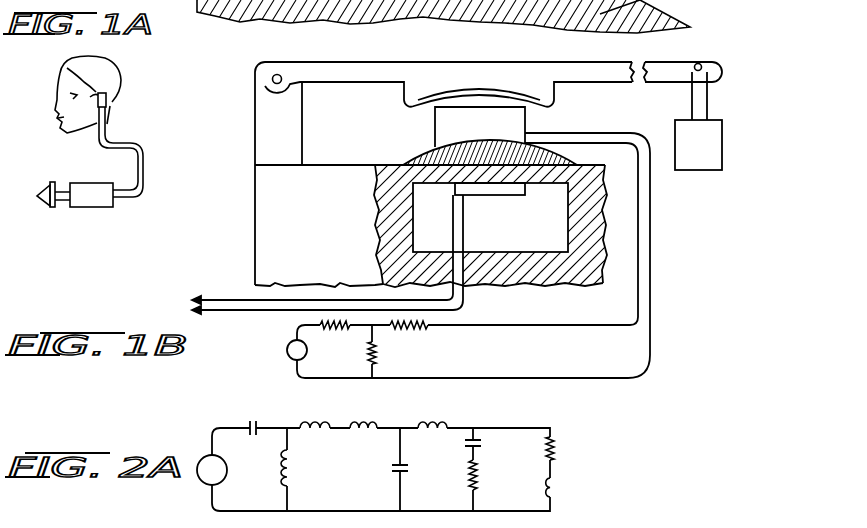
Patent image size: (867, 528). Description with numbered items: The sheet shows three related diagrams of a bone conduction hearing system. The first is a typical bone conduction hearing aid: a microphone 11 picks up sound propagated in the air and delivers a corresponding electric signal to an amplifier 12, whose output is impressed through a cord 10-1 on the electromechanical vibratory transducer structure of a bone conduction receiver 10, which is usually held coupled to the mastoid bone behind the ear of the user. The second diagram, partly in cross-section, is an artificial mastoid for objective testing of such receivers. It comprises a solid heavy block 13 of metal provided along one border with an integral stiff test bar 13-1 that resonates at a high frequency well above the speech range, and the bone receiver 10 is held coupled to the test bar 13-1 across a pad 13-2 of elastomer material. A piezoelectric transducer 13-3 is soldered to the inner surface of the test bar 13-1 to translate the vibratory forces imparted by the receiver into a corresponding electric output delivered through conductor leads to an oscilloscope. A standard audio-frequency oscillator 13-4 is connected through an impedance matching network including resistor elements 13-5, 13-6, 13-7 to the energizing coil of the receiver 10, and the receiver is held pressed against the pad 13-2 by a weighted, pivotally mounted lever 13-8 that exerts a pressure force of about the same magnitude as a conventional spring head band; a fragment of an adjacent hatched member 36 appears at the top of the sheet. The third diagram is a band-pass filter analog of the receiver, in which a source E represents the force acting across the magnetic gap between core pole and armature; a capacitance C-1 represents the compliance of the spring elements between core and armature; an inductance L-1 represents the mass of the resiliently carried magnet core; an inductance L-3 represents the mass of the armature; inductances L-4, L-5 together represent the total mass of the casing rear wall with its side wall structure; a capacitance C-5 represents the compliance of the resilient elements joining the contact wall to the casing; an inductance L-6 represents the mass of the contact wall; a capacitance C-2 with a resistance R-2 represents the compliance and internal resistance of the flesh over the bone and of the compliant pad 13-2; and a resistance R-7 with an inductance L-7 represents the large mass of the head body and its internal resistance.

In FIG. 1A, the bone conduction receiver 10 is at (108, 98).
In FIG. 1B, the bone conduction receiver 10 is at (436, 124).
In FIG. 1A, the cord 10-1 is at (145, 165).
In FIG. 1A, the microphone 11 is at (47, 186).
In FIG. 1A, the amplifier 12 is at (88, 206).
In FIG. 1B, the solid heavy block 13 is at (380, 236).
In FIG. 1B, the test bar 13-1 is at (547, 173).
In FIG. 1B, the pad 13-2 is at (428, 149).
In FIG. 1B, the piezoelectric transducer 13-3 is at (485, 193).
In FIG. 1B, the audio-frequency oscillator 13-4 is at (287, 350).
In FIG. 1B, the resistor element 13-5 is at (333, 331).
In FIG. 1B, the resistor element 13-6 is at (427, 330).
In FIG. 1B, the resistor element 13-7 is at (378, 356).
In FIG. 1B, the pivoted arm 13-8 is at (590, 68).
In FIG. 1B, the member 36 is at (573, 21).
In FIG. 2A, the force E is at (200, 458).
In FIG. 2A, the compliance of the spring elements C-1 is at (253, 423).
In FIG. 1B, the capacitor C-2 is at (650, 15).
In FIG. 2A, the capacitor C-2 is at (480, 448).
In FIG. 2A, the compliance of the resilient elements C-5 is at (405, 473).
In FIG. 2A, the mass of the magnet core L-1 is at (298, 486).
In FIG. 2A, the mass of the armature L-3 is at (330, 421).
In FIG. 2A, the mass of the casing rear wall L-4 is at (374, 413).
In FIG. 2A, the mass of the casing side wall structure L-5 is at (380, 413).
In FIG. 2A, the mass of the contact wall L-6 is at (441, 423).
In FIG. 2A, the mass of the head body L-7 is at (555, 488).
In FIG. 1B, the internal resistance of the flesh R-2 is at (663, 28).
In FIG. 2A, the internal resistance of the flesh R-2 is at (479, 483).
In FIG. 2A, the internal resistance of the head body R-7 is at (553, 449).